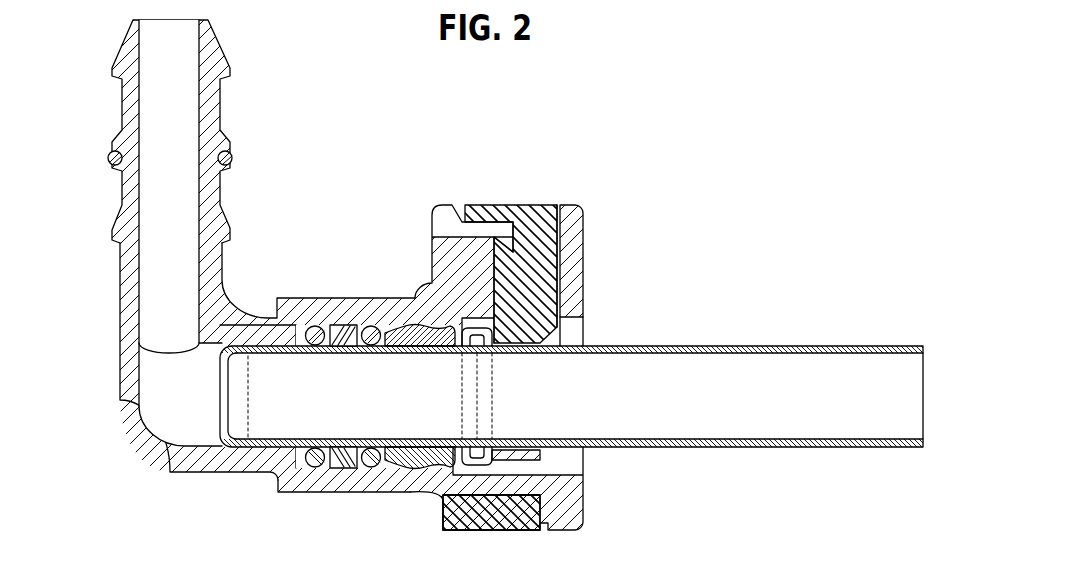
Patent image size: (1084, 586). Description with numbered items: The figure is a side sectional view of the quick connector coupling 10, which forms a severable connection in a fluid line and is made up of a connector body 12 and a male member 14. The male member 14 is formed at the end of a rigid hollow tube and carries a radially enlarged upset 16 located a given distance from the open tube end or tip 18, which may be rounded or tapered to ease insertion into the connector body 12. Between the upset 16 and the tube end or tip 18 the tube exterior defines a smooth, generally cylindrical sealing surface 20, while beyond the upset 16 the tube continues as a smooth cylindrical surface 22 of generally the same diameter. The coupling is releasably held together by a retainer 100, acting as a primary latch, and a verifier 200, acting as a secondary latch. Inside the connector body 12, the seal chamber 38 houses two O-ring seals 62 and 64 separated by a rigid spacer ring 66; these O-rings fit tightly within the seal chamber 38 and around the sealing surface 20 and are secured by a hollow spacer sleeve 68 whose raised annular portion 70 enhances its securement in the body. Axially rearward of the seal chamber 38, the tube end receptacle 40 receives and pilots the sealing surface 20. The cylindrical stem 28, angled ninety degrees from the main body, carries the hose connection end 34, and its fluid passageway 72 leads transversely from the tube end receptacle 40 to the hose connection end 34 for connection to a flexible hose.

The quick connector coupling 10 is at (694, 200).
The connector body 12 is at (432, 258).
The male member 14 is at (800, 425).
The radially enlarged upset 16 is at (497, 461).
The tube end or tip 18 is at (240, 420).
The cylindrical sealing surface 20 is at (283, 452).
The smooth cylindrical surface 22 is at (786, 345).
The cylindrical stem 28 is at (123, 300).
The hose connection end 34 is at (218, 42).
The seal chamber 38 is at (370, 472).
The tube end receptacle 40 is at (207, 420).
The O-ring seal 62 is at (320, 328).
The O-ring seal 64 is at (378, 328).
The rigid spacer ring 66 is at (347, 328).
The hollow spacer sleeve 68 is at (417, 326).
The raised annular portion 70 is at (417, 474).
The fluid passageway 72 is at (157, 190).
The retainer 100 is at (513, 527).
The verifier 200 is at (533, 205).